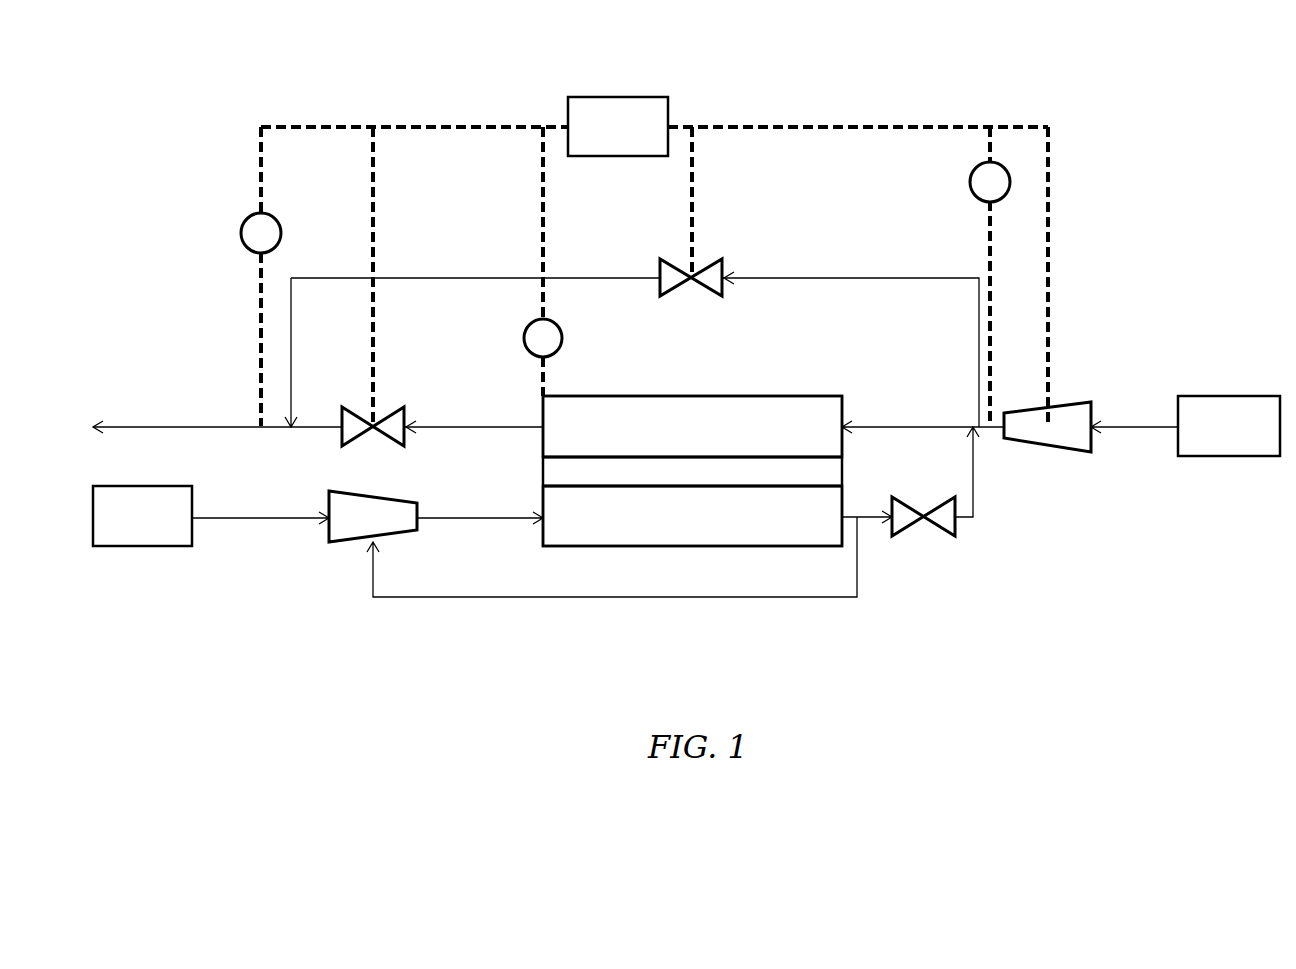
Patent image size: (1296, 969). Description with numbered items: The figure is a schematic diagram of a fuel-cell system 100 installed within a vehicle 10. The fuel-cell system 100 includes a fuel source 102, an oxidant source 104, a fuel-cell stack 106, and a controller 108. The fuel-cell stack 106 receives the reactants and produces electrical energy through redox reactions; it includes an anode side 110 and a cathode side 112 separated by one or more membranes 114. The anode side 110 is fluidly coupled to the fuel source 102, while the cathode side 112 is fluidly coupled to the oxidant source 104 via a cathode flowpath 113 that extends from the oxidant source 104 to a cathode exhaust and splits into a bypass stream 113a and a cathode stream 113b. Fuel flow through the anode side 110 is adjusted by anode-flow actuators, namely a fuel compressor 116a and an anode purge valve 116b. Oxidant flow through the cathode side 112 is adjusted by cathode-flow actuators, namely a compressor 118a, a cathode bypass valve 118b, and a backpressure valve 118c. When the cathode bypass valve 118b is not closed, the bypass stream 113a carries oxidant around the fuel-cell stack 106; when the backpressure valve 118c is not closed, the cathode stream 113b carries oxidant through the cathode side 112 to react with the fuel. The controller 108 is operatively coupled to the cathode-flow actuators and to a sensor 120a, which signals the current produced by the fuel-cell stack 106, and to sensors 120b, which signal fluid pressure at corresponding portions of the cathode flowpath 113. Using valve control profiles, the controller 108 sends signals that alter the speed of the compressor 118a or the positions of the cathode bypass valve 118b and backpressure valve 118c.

The vehicle 10 is at (178, 102).
The fuel-cell system 100 is at (224, 350).
The fuel source 102 is at (125, 530).
The oxidant source 104 is at (1212, 439).
The fuel-cell stack 106 is at (787, 380).
The controller 108 is at (601, 139).
The anode side 110 is at (670, 532).
The cathode side 112 is at (670, 439).
The cathode flowpath 113 is at (1138, 445).
The bypass stream 113a is at (919, 413).
The cathode stream 113b is at (912, 265).
The membrane 114 is at (562, 478).
The fuel compressor 116a is at (329, 542).
The anode purge valve 116b is at (935, 525).
The compressor 118a is at (1085, 400).
The cathode bypass valve 118b is at (718, 257).
The backpressure valve 118c is at (398, 408).
The sensor 120a is at (562, 342).
The sensors 120b is at (248, 245).